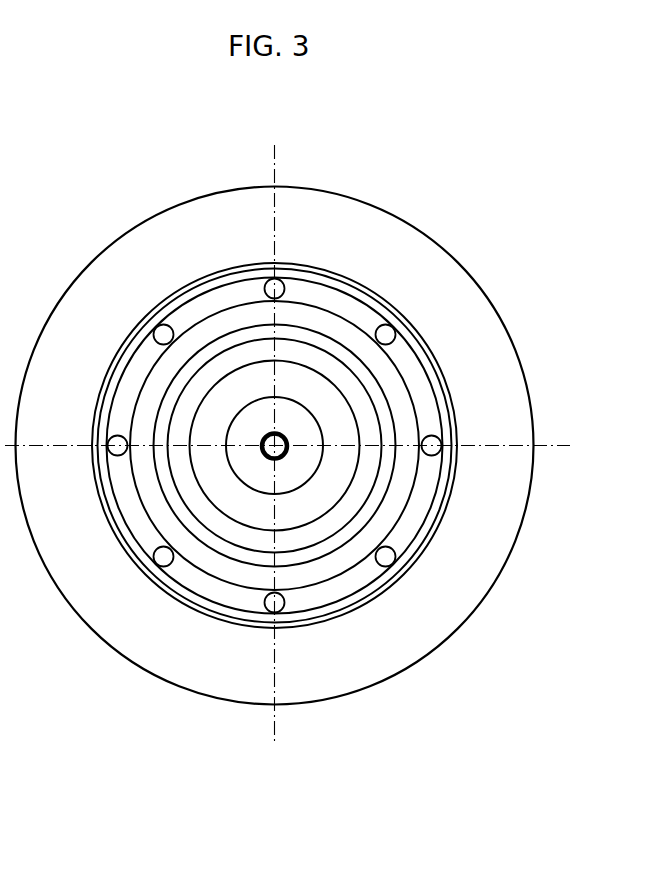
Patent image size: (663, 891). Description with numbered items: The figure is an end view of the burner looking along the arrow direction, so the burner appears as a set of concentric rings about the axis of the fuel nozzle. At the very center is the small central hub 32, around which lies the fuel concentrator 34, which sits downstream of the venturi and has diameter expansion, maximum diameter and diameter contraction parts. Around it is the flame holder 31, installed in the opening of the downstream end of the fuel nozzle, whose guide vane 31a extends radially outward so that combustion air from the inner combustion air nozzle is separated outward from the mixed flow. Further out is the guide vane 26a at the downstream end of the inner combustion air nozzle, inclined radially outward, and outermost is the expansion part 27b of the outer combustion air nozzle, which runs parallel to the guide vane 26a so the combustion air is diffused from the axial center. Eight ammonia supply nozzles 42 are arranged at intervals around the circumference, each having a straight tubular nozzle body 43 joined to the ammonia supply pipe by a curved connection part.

The expansion part 27b is at (495, 565).
The guide vane 26a is at (408, 542).
The guide vane 31a is at (358, 570).
The flame holder 31 is at (308, 542).
The fuel concentrator 34 is at (300, 482).
The central shaft 32 is at (270, 435).
The ammonia supply nozzle 42 is at (275, 379).
The nozzle body 43 is at (376, 540).